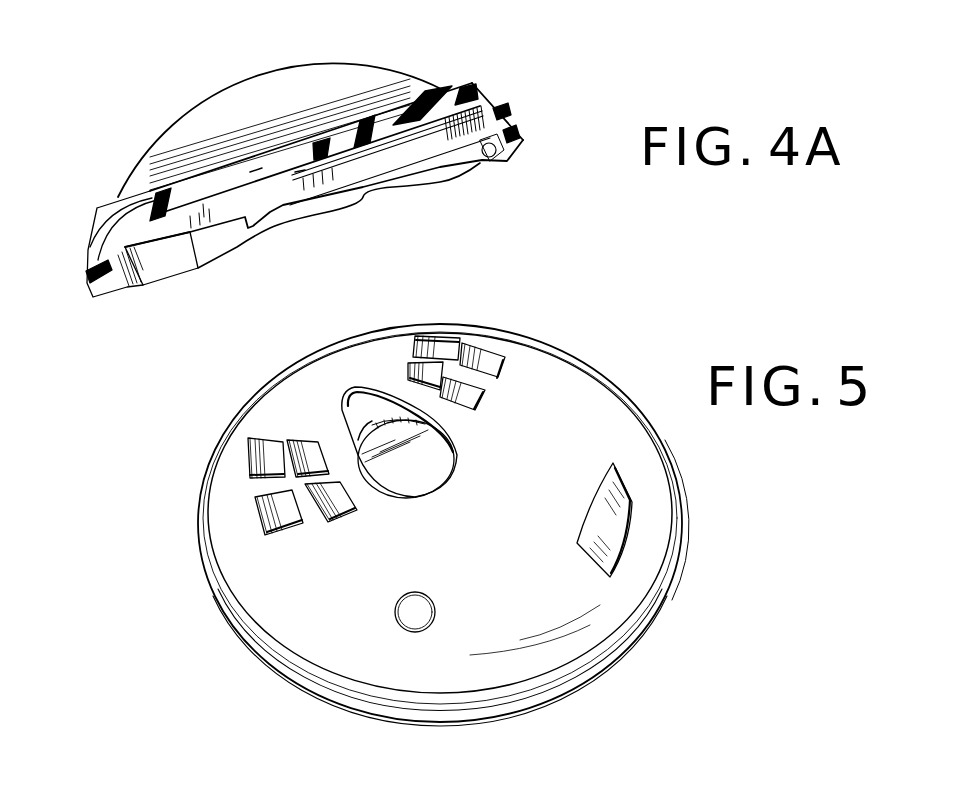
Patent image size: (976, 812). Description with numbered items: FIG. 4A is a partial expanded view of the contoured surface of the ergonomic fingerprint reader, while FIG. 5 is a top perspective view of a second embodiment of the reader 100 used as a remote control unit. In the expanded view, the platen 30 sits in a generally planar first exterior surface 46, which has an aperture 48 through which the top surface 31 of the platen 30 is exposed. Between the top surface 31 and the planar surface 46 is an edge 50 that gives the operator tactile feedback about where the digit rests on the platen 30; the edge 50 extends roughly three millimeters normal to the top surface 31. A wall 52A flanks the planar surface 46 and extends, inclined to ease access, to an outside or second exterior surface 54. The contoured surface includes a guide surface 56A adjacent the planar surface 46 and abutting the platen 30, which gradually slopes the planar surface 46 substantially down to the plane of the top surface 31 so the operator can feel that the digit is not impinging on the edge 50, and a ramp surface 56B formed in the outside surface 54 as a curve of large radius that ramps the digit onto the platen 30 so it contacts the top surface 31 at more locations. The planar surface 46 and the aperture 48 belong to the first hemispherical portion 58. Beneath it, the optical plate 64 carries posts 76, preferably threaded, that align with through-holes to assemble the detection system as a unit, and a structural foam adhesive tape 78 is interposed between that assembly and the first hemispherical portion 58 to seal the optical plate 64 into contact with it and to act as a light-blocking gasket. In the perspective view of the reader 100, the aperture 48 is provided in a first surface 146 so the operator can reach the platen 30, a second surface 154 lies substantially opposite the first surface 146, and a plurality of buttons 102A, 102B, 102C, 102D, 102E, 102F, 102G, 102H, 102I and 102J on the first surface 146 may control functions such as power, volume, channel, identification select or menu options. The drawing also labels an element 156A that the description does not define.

In FIG. 4A, the wall 52A is at (213, 113).
In FIG. 4A, the top surface 31 is at (257, 180).
In FIG. 5, the top surface 31 is at (425, 447).
In FIG. 4A, the edge 50 is at (292, 175).
In FIG. 4A, the aperture 48 is at (321, 150).
In FIG. 5, the aperture 48 is at (445, 458).
In FIG. 4A, the planar surface 46 is at (400, 107).
In FIG. 4A, the first hemispherical portion 58 is at (490, 110).
In FIG. 4A, the guide surface 56A is at (180, 200).
In FIG. 4A, the ramp surface 56B is at (117, 210).
In FIG. 4A, the outside surface 54 is at (88, 270).
In FIG. 4A, the posts 76 is at (170, 260).
In FIG. 4A, the platen 30 is at (287, 173).
In FIG. 5, the platen 30 is at (405, 457).
In FIG. 4A, the structural foam adhesive tape 78 is at (400, 147).
In FIG. 4A, the optical plate 64 is at (438, 147).
In FIG. 5, the ergonomic reader 100 is at (277, 657).
In FIG. 5, the second surface 154 is at (415, 722).
In FIG. 5, the first surface 146 is at (650, 591).
In FIG. 5, the central boss 156A is at (357, 398).
In FIG. 5, the button 102A is at (420, 363).
In FIG. 5, the button 102B is at (482, 393).
In FIG. 5, the button 102C is at (447, 342).
In FIG. 5, the button 102D is at (500, 358).
In FIG. 5, the button 102E is at (305, 460).
In FIG. 5, the button 102F is at (335, 507).
In FIG. 5, the button 102G is at (262, 462).
In FIG. 5, the button 102H is at (270, 515).
In FIG. 5, the button 102I is at (427, 615).
In FIG. 5, the button 102J is at (620, 520).